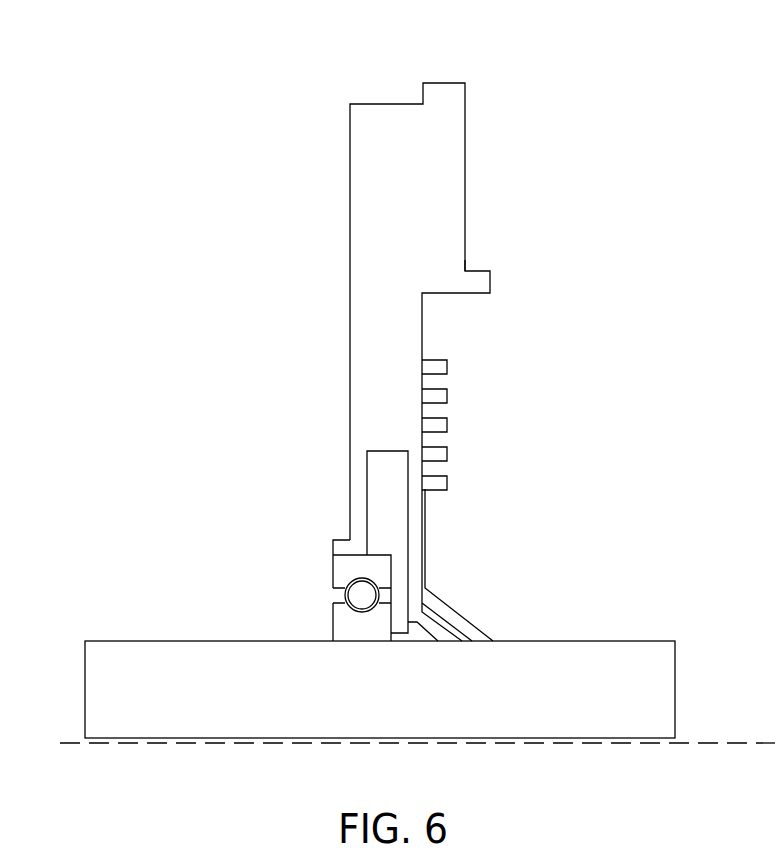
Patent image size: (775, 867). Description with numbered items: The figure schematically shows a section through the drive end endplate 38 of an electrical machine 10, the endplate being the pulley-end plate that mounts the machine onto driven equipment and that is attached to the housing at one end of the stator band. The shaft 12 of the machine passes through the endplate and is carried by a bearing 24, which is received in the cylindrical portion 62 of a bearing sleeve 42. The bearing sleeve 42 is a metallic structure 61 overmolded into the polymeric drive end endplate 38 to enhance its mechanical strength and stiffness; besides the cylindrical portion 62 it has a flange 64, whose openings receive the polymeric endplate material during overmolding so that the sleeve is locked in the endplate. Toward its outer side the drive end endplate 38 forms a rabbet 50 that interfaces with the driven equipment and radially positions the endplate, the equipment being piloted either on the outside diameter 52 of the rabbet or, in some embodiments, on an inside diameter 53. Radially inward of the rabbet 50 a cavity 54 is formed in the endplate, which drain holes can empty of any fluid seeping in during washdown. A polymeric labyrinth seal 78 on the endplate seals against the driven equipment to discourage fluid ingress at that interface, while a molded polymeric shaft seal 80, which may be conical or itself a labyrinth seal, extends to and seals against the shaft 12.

The electrical machine 10 is at (194, 162).
The shaft 12 is at (130, 641).
The bearing 24 is at (333, 576).
The drive end endplate 38 is at (445, 83).
The bearing sleeve 42 is at (333, 546).
The rabbet 50 is at (492, 277).
The outside diameter 52 is at (468, 271).
The inside diameter 53 is at (492, 290).
The cavity 54 is at (458, 342).
The metallic structure 61 is at (230, 491).
The cylindrical portion 62 is at (338, 540).
The flange 64 is at (381, 451).
The polymeric labyrinth seal 78 is at (464, 398).
The molded polymeric shaft seal 80 is at (478, 625).